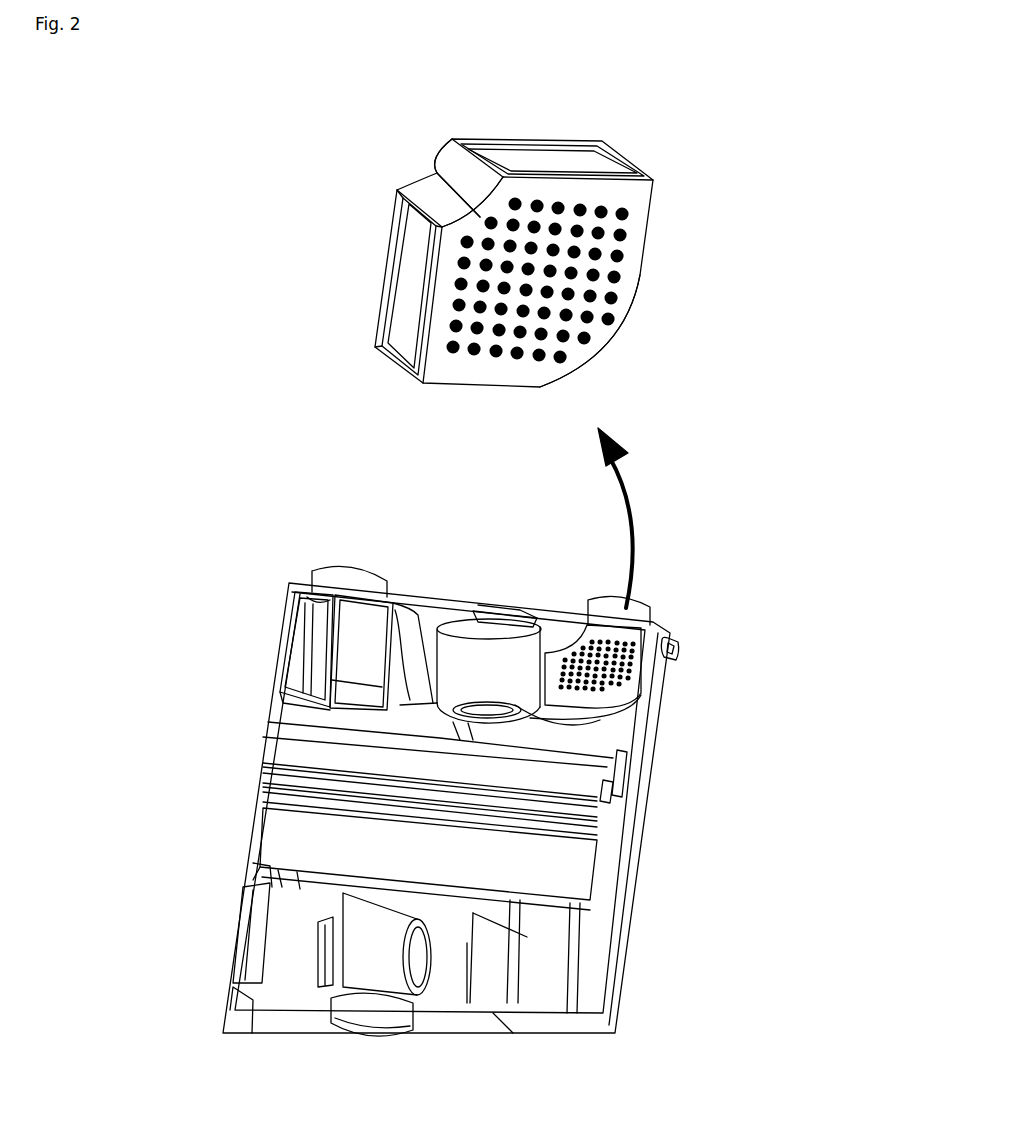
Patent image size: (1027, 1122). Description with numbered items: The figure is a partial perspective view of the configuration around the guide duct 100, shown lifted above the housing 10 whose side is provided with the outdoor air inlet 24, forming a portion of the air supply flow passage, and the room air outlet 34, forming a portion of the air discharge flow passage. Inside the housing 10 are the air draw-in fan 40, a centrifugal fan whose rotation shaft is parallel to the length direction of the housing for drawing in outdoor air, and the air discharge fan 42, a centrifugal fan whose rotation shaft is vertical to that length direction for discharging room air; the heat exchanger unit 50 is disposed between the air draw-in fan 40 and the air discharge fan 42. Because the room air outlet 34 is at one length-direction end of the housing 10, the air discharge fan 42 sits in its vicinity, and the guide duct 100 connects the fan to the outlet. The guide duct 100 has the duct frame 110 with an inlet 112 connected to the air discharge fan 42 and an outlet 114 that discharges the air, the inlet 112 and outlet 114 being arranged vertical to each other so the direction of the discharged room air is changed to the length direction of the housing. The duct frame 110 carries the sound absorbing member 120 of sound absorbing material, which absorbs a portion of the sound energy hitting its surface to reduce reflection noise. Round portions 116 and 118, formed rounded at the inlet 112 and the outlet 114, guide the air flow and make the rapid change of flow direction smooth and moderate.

The housing 10 is at (228, 1000).
The outdoor air inlet 24 is at (348, 578).
The room air outlet 34 is at (603, 603).
The air draw-in fan 40 is at (372, 953).
The air discharge fan 42 is at (467, 657).
The heat exchanger unit 50 is at (291, 844).
The guide duct 100 is at (374, 181).
The duct frame 110 is at (476, 389).
The inlet 112 is at (409, 284).
The outlet 114 is at (543, 158).
The round portion 116 is at (593, 370).
The round portion 118 is at (441, 170).
The sound absorbing member 120 is at (612, 297).